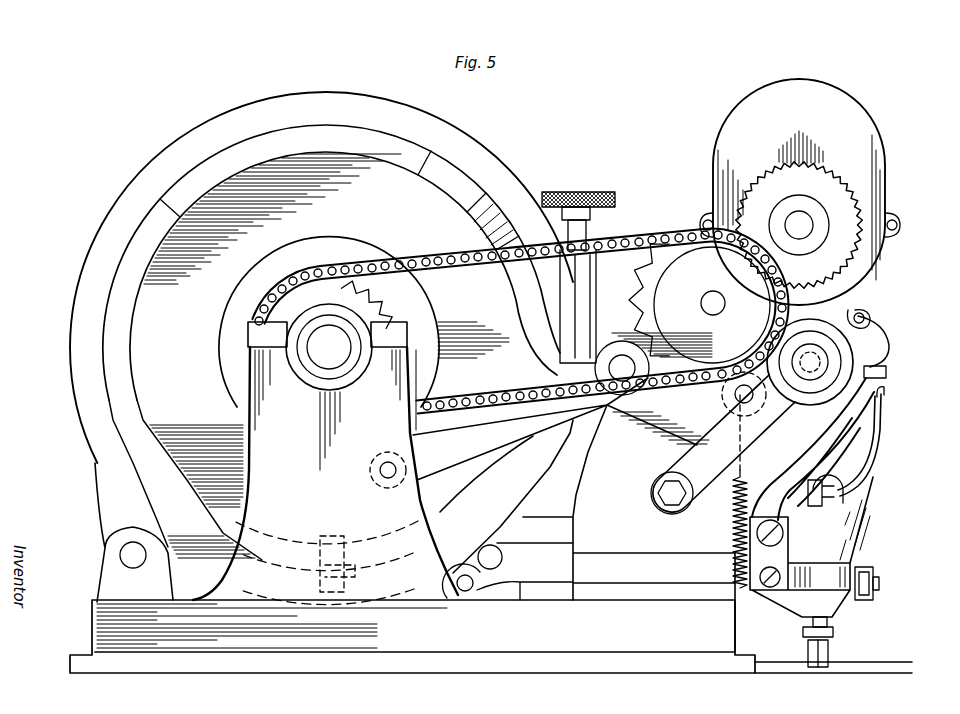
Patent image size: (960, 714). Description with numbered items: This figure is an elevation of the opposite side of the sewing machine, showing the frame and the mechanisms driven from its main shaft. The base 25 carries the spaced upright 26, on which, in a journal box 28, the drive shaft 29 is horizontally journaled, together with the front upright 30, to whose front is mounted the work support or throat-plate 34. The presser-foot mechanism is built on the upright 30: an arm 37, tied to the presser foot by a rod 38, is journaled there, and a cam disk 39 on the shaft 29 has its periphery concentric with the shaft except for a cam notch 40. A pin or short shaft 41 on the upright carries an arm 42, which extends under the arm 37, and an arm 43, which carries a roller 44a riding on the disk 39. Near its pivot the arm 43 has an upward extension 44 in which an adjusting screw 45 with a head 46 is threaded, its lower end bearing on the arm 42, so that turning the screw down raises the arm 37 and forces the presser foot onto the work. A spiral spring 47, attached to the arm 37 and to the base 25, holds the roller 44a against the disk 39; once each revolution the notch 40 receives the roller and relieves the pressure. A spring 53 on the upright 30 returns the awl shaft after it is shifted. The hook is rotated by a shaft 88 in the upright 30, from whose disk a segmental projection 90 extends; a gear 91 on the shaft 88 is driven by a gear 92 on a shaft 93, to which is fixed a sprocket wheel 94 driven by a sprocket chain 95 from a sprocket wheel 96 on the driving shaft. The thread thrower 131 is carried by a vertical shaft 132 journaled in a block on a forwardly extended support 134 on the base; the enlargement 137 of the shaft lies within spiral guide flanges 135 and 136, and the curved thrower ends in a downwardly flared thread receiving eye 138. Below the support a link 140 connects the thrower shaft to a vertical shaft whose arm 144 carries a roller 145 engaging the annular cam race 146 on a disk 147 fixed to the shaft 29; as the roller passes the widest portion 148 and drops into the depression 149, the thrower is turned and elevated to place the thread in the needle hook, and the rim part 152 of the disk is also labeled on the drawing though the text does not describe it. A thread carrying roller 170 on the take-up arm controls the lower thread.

The base 25 is at (670, 663).
The upright 26 is at (413, 473).
The journal box 28 is at (252, 336).
The drive shaft 29 is at (325, 357).
The upright 30 is at (605, 478).
The work support or throat-plate 34 is at (868, 138).
The arm 37 is at (692, 406).
The rod 38 is at (738, 345).
The cam disk 39 is at (240, 285).
The cam notch 40 is at (334, 246).
The pin or short shaft 41 is at (622, 355).
The arm 42 is at (673, 438).
The arm 43 is at (470, 405).
The upward extension 44 is at (362, 466).
The roller 44a is at (573, 295).
The adjusting screw 45 is at (587, 233).
The head 46 is at (582, 192).
The spiral spring 47 is at (733, 517).
The spring 53 is at (775, 397).
The shaft 88 is at (800, 224).
The segmental projection 90 is at (827, 365).
The gear 91 is at (828, 185).
The gear 92 is at (750, 273).
The shaft 93 is at (713, 294).
The sprocket wheel 94 is at (658, 274).
The sprocket chain 95 is at (452, 262).
The sprocket wheel 96 is at (372, 306).
The thread thrower 131 is at (879, 447).
The shaft 132 is at (828, 622).
The support 134 is at (797, 590).
The guide flange 135 is at (830, 478).
The guide flange 136 is at (827, 507).
The enlargement 137 is at (808, 510).
The thread receiving eye 138 is at (885, 391).
The link 140 is at (782, 663).
The arm 144 is at (465, 604).
The roller 145 is at (323, 557).
The annular cam race 146 is at (115, 362).
The disk 147 is at (147, 392).
The widest portion 148 is at (512, 235).
The depression 149 is at (472, 187).
The rim 152 is at (148, 221).
The thread carrying roller 170 is at (863, 568).